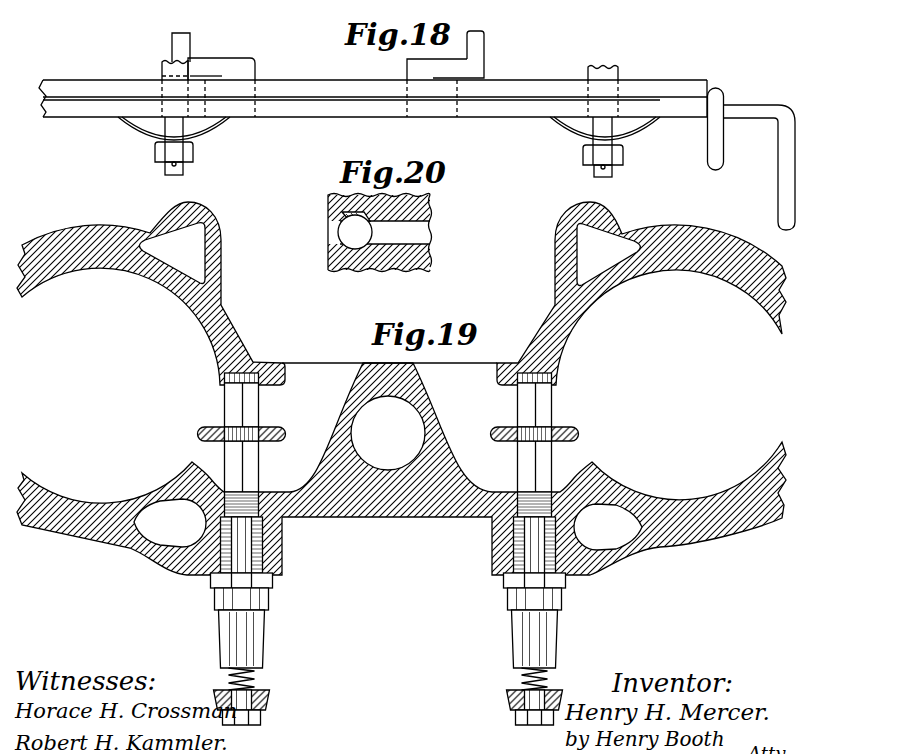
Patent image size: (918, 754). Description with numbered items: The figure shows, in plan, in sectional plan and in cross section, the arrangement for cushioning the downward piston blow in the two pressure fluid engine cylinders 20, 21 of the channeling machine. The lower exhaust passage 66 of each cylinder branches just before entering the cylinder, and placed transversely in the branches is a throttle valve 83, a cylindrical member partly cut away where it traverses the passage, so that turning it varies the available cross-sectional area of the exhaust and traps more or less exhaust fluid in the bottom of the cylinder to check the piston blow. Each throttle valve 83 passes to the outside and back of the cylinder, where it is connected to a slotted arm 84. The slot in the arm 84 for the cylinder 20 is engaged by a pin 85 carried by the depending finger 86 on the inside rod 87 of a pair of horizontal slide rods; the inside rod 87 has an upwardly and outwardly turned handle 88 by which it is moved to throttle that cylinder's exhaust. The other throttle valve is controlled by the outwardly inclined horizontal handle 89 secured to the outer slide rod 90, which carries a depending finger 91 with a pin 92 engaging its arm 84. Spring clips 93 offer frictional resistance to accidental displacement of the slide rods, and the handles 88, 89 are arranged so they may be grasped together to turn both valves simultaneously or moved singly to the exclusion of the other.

In FIG. 19, the cylinder 20 is at (90, 232).
In FIG. 19, the cylinder 21 is at (692, 238).
In FIG. 19, the lower exhaust passage 66 is at (306, 372).
In FIG. 20, the throttle valve 83 is at (340, 232).
In FIG. 19, the throttle valve 83 is at (258, 464).
In FIG. 19, the slotted arm 84 is at (262, 695).
In FIG. 18, the pin 85 is at (183, 45).
In FIG. 18, the depending finger 86 is at (239, 63).
In FIG. 18, the inside rod 87 is at (295, 86).
In FIG. 18, the handle 88 is at (708, 157).
In FIG. 18, the handle 89 is at (779, 172).
In FIG. 18, the outer slide rod 90 is at (397, 107).
In FIG. 18, the depending finger 91 is at (407, 68).
In FIG. 18, the pin 92 is at (472, 50).
In FIG. 18, the spring clips 93 is at (205, 126).